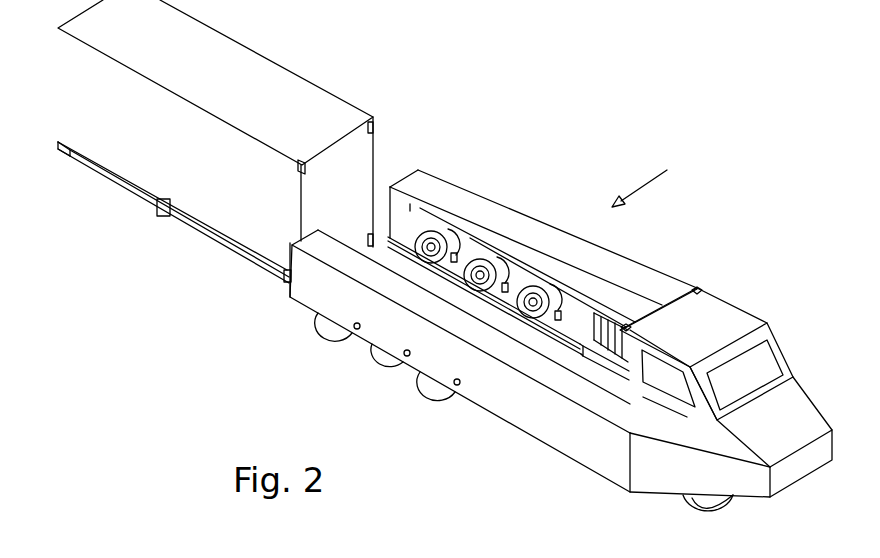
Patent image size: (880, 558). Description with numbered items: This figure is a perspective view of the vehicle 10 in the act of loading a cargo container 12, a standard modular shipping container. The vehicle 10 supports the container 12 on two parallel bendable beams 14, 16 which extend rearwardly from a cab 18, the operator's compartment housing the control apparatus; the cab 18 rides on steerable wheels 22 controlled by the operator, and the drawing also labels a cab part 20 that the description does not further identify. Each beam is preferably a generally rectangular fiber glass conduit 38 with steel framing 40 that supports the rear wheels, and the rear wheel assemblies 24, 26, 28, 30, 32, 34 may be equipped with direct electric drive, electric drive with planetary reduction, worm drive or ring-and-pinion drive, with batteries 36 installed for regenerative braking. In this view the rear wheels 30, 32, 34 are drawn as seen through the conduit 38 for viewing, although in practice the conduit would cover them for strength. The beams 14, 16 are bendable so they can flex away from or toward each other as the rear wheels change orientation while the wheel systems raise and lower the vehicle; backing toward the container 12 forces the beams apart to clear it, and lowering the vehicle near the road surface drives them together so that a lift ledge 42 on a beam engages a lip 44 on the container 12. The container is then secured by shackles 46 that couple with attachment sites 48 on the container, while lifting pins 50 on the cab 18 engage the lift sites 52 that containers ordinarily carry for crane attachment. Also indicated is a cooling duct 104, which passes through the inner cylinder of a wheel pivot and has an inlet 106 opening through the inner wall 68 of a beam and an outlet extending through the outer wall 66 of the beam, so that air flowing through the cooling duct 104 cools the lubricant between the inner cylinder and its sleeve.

The vehicle 10 is at (655, 179).
The container 12 is at (237, 43).
The bendable beam 14 is at (510, 412).
The bendable beam 16 is at (527, 247).
The cab 18 is at (727, 395).
The cab roof 20 is at (726, 359).
The steerable wheels 22 is at (720, 516).
The rear wheel assembly 24 is at (318, 317).
The rear wheel assembly 26 is at (395, 362).
The rear wheel assembly 28 is at (448, 382).
The rear wheel 30 is at (434, 232).
The rear wheel 32 is at (479, 258).
The rear wheel 34 is at (548, 292).
The batteries 36 is at (630, 326).
The fiber glass conduit 38 is at (610, 284).
The steel framing 40 is at (540, 300).
The lift ledge 42 is at (490, 268).
The lip 44 is at (220, 233).
The shackles 46 is at (386, 233).
The attachment sites 48 is at (64, 158).
The lifting pins 50 is at (703, 289).
The lift sites 52 is at (297, 167).
The outer wall 66 is at (298, 297).
The inner wall 68 is at (413, 193).
The cooling duct 104 is at (354, 330).
The inlet 106 is at (566, 336).